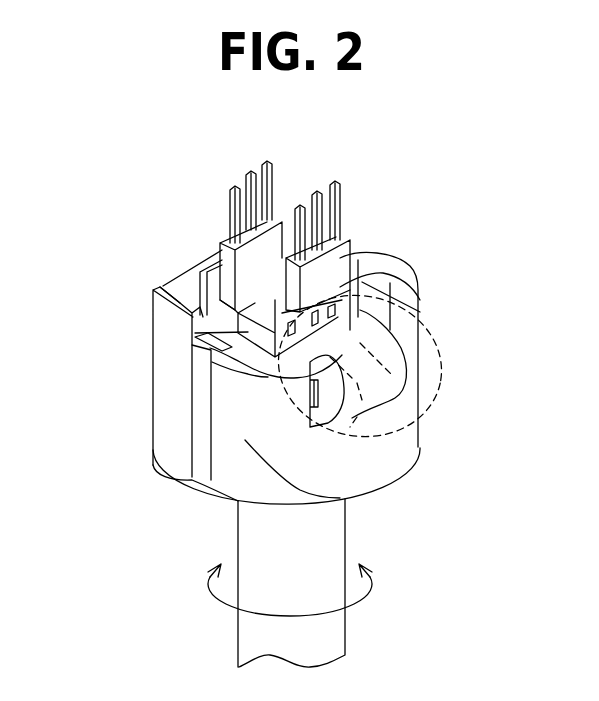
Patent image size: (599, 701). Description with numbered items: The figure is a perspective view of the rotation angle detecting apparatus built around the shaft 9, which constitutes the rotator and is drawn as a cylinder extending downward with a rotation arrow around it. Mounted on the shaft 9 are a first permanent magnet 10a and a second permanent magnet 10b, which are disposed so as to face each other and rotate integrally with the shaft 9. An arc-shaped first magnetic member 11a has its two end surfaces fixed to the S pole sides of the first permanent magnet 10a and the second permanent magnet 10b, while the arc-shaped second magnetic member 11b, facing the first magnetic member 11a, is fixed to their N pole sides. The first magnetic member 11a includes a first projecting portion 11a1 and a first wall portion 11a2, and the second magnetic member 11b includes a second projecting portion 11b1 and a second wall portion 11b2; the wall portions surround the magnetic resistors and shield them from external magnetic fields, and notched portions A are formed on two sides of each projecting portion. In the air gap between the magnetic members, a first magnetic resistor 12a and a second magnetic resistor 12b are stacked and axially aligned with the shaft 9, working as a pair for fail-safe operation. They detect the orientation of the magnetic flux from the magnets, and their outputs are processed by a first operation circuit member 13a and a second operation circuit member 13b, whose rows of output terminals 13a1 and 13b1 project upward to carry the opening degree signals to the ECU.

The shaft 9 is at (323, 639).
The first permanent magnet 10a is at (210, 480).
The second permanent magnet 10b is at (373, 242).
The first magnetic member 11a is at (383, 437).
The first projecting portion 11a1 is at (345, 382).
The first wall portion 11a2 is at (358, 465).
The second magnetic member 11b is at (167, 407).
The second projecting portion 11b1 is at (207, 270).
The second wall portion 11b2 is at (152, 390).
The first magnetic resistor 12a is at (383, 282).
The second magnetic resistor 12b is at (195, 333).
The first operation circuit member 13a is at (323, 277).
The output terminal 13a1 is at (338, 203).
The second operation circuit member 13b is at (263, 257).
The output terminal 13b1 is at (228, 205).
The notched portions A is at (438, 330).